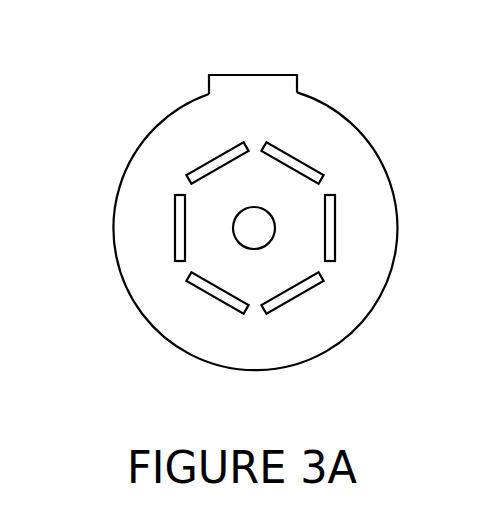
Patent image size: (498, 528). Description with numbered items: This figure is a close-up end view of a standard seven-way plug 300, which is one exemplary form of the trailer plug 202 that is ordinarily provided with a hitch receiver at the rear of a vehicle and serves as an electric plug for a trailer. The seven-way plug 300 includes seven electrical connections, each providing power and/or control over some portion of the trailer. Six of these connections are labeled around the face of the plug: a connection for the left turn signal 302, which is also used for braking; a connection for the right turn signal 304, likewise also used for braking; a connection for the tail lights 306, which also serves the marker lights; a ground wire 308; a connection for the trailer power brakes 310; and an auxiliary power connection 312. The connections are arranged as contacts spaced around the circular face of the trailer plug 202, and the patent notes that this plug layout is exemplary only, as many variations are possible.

The trailer plug 202 is at (118, 137).
The 7-way plug 300 is at (334, 132).
The left turn signal connection 302 is at (175, 232).
The right turn signal connection 304 is at (335, 232).
The tail lights connection 306 is at (208, 160).
The ground wire 308 is at (207, 293).
The trailer power brakes connection 310 is at (276, 311).
The auxiliary power connection 312 is at (290, 158).